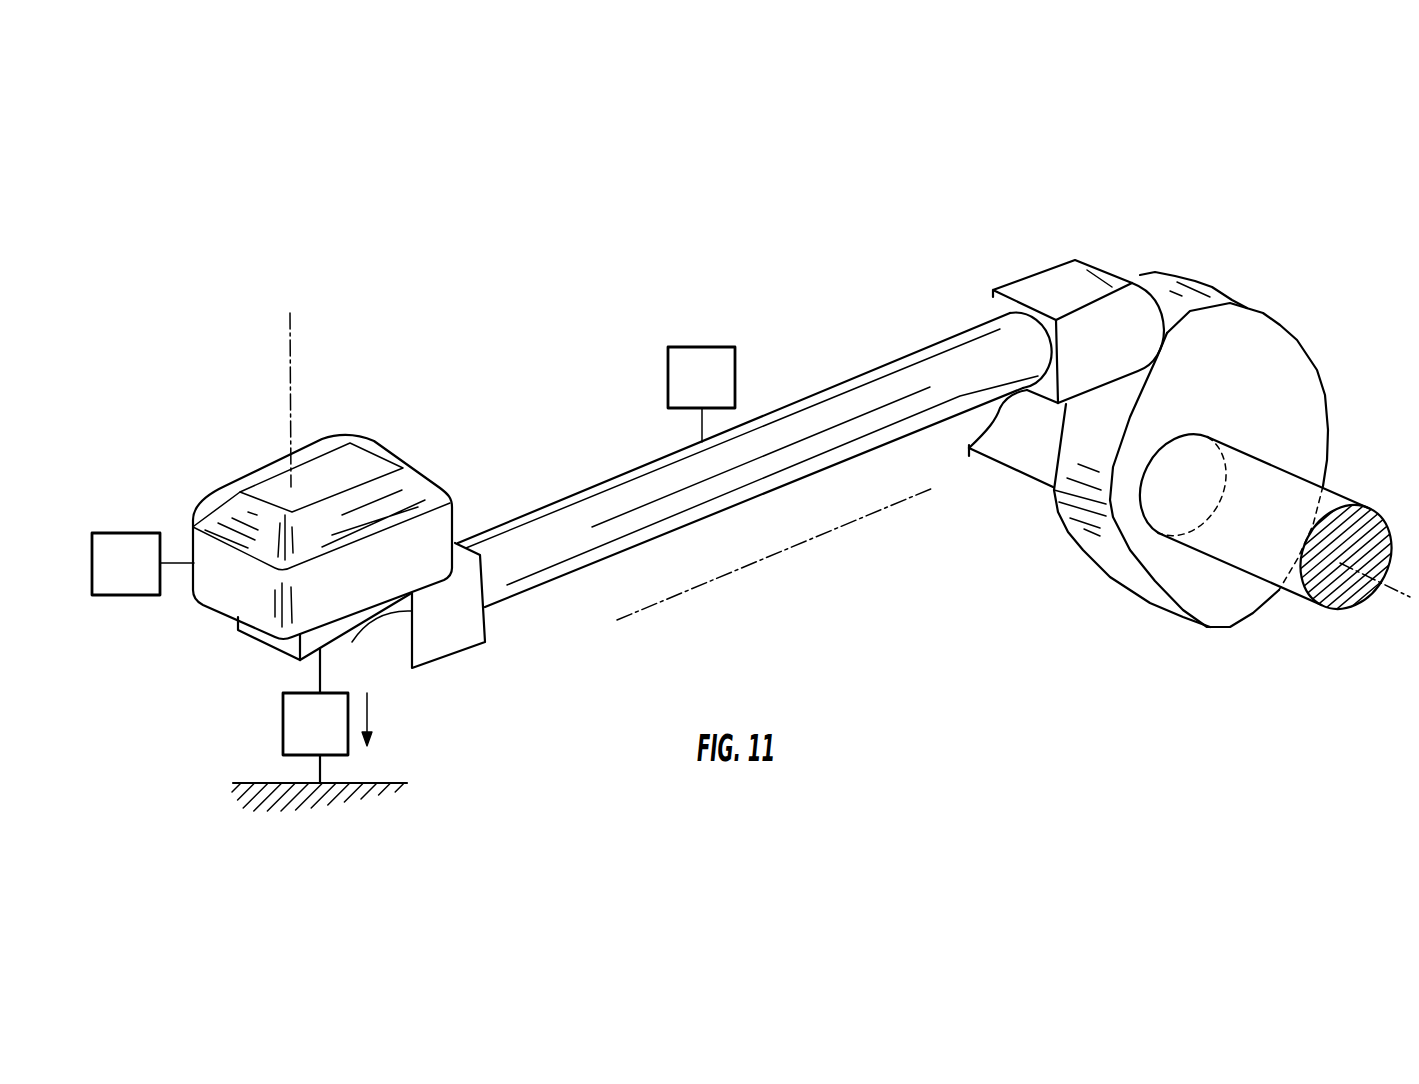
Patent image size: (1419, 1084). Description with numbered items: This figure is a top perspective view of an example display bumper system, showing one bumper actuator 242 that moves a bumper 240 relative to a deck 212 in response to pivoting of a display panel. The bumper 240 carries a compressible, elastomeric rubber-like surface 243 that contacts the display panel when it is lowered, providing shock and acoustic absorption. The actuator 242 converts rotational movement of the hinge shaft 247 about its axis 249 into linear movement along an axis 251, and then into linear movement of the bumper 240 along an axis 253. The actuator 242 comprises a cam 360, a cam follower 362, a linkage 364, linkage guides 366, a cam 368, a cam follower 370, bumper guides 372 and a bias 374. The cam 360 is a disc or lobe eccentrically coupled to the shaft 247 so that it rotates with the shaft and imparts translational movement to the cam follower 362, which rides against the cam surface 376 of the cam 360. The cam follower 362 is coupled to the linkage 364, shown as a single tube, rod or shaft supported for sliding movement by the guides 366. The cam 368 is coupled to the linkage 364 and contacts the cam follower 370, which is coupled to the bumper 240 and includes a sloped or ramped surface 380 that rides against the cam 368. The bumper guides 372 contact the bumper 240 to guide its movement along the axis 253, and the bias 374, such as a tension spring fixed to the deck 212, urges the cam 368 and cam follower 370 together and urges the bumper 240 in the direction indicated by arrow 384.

The deck 212 is at (357, 783).
The bumper 240 is at (443, 481).
The bumper actuator 242 is at (846, 369).
The rubber-like surface 243 is at (287, 480).
The shaft 247 is at (1313, 607).
The axis 249 is at (1384, 582).
The axis 251 is at (747, 567).
The axis 253 is at (290, 340).
The cam 360 is at (1240, 327).
The cam follower 362 is at (1118, 275).
The linkage 364 is at (898, 358).
The linkage guides 366 is at (668, 377).
The cam 368 is at (457, 654).
The cam follower 370 is at (358, 638).
The bumper guides 372 is at (132, 532).
The bias 374 is at (283, 726).
The cam surface 376 is at (1105, 430).
The ramped surface 380 is at (416, 628).
The arrow 384 is at (368, 718).